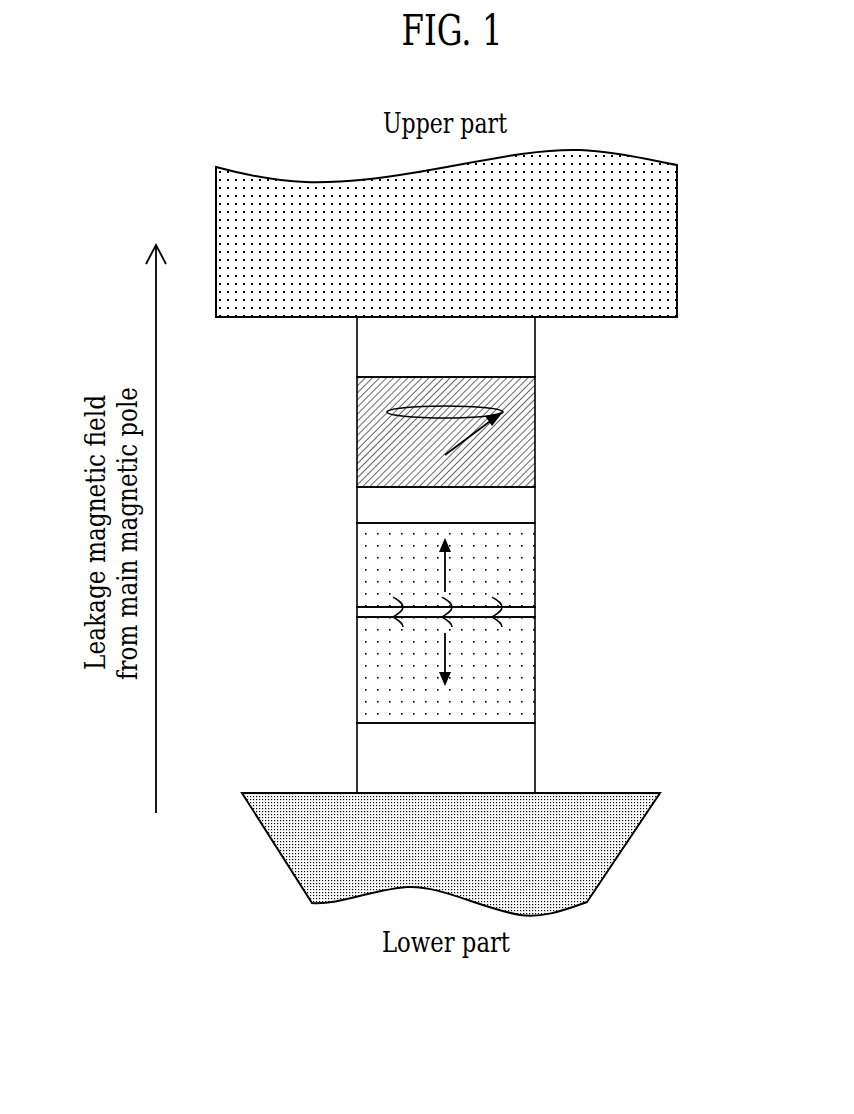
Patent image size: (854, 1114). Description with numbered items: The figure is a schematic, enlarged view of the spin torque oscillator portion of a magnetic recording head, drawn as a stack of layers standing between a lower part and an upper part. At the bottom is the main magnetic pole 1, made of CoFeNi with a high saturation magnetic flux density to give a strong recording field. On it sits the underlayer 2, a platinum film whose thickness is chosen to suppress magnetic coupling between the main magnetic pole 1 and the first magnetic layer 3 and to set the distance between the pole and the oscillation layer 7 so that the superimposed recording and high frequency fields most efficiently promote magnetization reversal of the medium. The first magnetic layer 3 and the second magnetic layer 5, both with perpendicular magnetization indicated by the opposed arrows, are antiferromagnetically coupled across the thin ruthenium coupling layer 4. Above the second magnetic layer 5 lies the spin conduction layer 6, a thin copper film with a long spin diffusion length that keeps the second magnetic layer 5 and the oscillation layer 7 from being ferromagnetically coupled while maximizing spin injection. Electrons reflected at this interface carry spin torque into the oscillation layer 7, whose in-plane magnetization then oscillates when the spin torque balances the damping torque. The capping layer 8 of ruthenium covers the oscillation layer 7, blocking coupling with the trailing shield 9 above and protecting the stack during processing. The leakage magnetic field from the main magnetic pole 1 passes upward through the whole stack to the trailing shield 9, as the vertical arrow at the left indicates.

The main magnetic pole 1 is at (655, 803).
The underlayer 2 is at (537, 762).
The first magnetic layer 3 is at (537, 660).
The coupling layer 4 is at (537, 607).
The second magnetic layer 5 is at (537, 557).
The spin conduction layer 6 is at (537, 502).
The oscillation layer 7 is at (537, 432).
The capping layer 8 is at (357, 335).
The trailing shield 9 is at (677, 262).